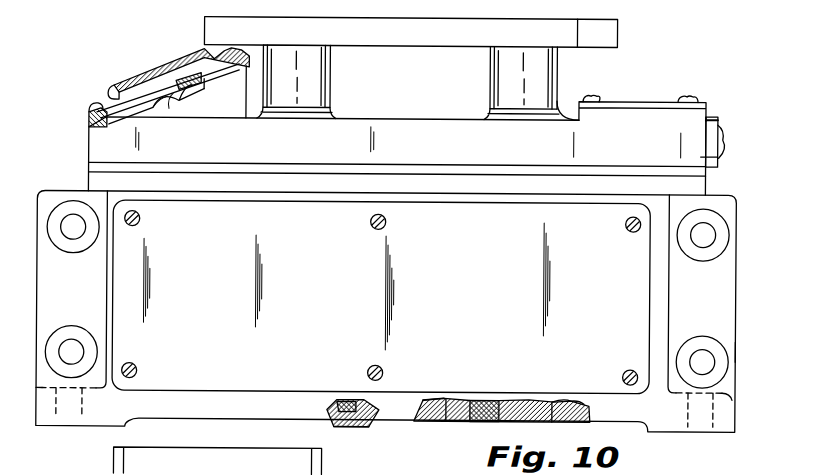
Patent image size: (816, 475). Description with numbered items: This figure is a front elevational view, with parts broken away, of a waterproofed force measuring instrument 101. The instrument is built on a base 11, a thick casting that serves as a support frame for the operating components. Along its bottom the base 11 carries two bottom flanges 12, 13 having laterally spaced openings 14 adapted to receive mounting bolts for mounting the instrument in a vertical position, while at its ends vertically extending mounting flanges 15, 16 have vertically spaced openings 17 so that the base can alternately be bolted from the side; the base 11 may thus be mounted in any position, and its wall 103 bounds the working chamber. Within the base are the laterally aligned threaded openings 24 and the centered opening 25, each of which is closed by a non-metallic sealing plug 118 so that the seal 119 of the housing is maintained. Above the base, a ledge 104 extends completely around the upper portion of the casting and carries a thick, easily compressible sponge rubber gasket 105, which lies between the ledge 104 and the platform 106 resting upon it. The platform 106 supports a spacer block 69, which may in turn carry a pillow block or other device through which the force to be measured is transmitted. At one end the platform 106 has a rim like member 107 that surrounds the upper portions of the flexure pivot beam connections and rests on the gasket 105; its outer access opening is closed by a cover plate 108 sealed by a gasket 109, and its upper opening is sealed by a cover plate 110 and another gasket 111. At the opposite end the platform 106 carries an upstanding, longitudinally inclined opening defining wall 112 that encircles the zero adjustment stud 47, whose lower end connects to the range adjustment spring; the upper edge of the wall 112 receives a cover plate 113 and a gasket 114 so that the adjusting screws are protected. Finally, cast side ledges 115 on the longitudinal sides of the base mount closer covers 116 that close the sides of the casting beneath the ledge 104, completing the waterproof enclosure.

The base 11 is at (163, 442).
The bottom flange 12 is at (43, 431).
The bottom flange 13 is at (674, 427).
The opening 14 is at (61, 431).
The mounting flange 15 is at (45, 283).
The mounting flange 16 is at (728, 278).
The opening 17 is at (73, 236).
The threaded opening 24 is at (346, 401).
The opening 25 is at (563, 400).
The double ended stud 47 is at (181, 100).
The spacer block 69 is at (443, 31).
The assembly 101 is at (495, 24).
The housing wall 103 is at (738, 351).
The ledge 104 is at (737, 188).
The gasket 105 is at (87, 167).
The platform 106 is at (372, 118).
The rim like member 107 is at (699, 155).
The cover plate 108 is at (720, 122).
The gasket 109 is at (707, 110).
The cover plate 110 is at (644, 98).
The gasket 111 is at (578, 102).
The opening defining wall 112 is at (245, 88).
The cover plate 113 is at (96, 100).
The gasket 114 is at (88, 116).
The side ledge 115 is at (613, 202).
The closer cover 116 is at (466, 282).
The sealing plug 118 is at (346, 428).
The seal body 119 is at (441, 400).